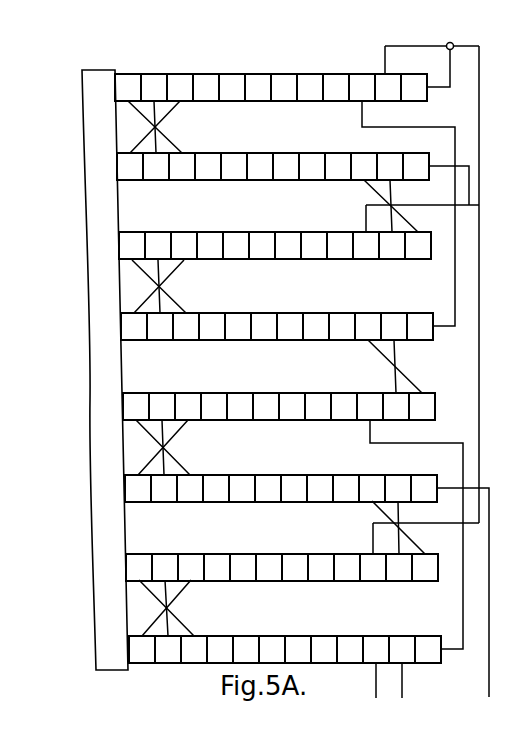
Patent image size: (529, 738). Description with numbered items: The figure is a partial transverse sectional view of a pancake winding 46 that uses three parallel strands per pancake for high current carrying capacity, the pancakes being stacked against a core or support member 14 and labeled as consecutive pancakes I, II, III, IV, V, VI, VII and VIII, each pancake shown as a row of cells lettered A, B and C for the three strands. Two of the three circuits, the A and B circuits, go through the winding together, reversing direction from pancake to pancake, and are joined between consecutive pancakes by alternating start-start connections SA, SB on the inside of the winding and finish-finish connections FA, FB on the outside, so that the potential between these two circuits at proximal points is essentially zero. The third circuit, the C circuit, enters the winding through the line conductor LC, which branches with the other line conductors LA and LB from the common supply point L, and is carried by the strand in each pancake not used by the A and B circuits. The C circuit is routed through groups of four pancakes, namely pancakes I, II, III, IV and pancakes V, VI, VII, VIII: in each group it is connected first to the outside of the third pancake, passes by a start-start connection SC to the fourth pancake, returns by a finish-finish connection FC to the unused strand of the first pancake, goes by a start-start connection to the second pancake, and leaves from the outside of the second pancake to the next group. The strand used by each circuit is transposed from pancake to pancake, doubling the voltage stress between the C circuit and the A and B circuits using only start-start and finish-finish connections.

The stator core / support bar 14 is at (97, 70).
The winding 46 is at (286, 66).
The pancake I is at (501, 94).
The pancake II is at (504, 179).
The pancake III is at (503, 255).
The pancake IV is at (504, 333).
The pancake V is at (502, 419).
The pancake VI is at (519, 495).
The pancake VII is at (525, 574).
The pancake VIII is at (528, 654).
The supply line node L is at (447, 43).
The phase A supply line LA is at (449, 68).
The phase B supply line LB is at (391, 46).
The line conductor LC is at (479, 107).
The phase A feed connection FA is at (404, 220).
The phase B feed connection FB is at (391, 191).
The phase C feed connection FC is at (455, 155).
The phase A series connection SA is at (171, 111).
The phase B series connection SB is at (154, 118).
The phase C series connection SC is at (175, 147).